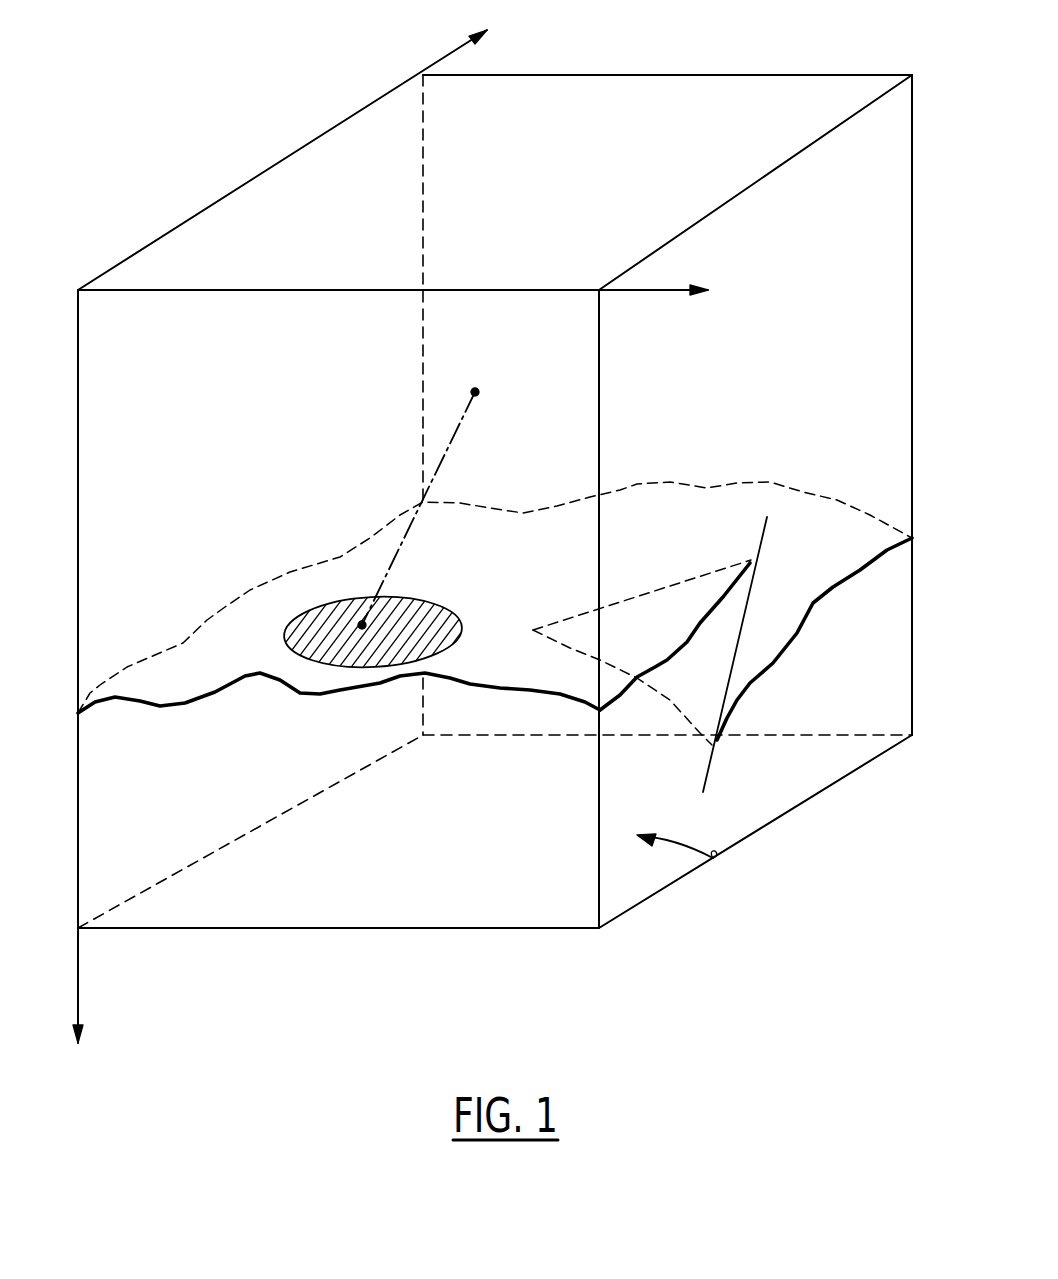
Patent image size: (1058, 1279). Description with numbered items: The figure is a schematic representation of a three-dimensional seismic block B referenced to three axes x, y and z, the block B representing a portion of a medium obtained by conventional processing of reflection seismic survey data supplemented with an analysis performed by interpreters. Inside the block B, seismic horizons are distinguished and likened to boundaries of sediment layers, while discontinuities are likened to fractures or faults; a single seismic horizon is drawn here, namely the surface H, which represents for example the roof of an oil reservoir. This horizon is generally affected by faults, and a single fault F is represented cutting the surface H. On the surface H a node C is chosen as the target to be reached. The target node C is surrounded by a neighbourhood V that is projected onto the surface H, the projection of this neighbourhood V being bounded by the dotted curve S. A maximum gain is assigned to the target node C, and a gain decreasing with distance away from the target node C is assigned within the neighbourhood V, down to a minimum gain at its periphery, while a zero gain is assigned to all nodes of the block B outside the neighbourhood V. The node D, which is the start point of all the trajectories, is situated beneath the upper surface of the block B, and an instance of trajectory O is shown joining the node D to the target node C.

The x axis x is at (672, 283).
The y axis y is at (299, 145).
The z axis z is at (94, 990).
The surface H is at (495, 611).
The fault F is at (652, 654).
The dotted curve S is at (450, 648).
The neighbourhood V is at (448, 627).
The trajectory O is at (457, 438).
The node D is at (495, 382).
The target node C is at (325, 689).
The seismic block B is at (715, 855).